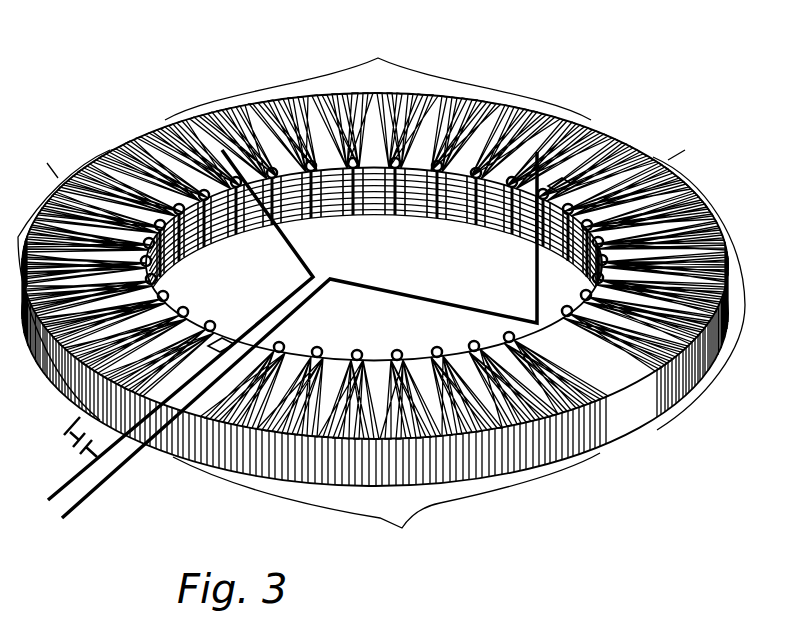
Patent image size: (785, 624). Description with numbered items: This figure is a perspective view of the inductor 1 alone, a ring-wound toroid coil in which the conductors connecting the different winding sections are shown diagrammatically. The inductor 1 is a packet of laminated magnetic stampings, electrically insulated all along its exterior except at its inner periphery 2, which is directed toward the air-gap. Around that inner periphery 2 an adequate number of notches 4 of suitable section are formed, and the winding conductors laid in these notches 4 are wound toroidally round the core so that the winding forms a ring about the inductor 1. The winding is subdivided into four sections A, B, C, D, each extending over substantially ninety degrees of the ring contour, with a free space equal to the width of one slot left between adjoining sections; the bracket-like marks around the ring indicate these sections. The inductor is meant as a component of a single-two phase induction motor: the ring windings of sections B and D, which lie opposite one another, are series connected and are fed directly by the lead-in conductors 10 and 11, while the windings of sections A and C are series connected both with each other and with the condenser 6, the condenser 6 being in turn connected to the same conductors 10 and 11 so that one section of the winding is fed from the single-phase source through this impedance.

The inductor 1 is at (622, 437).
The inner periphery 2 is at (485, 217).
The notches 4 is at (565, 180).
The condenser 6 is at (63, 443).
The conductor 10 is at (115, 471).
The conductor 11 is at (57, 491).
The winding section A is at (699, 277).
The winding section B is at (386, 508).
The winding section C is at (64, 277).
The winding section D is at (378, 69).